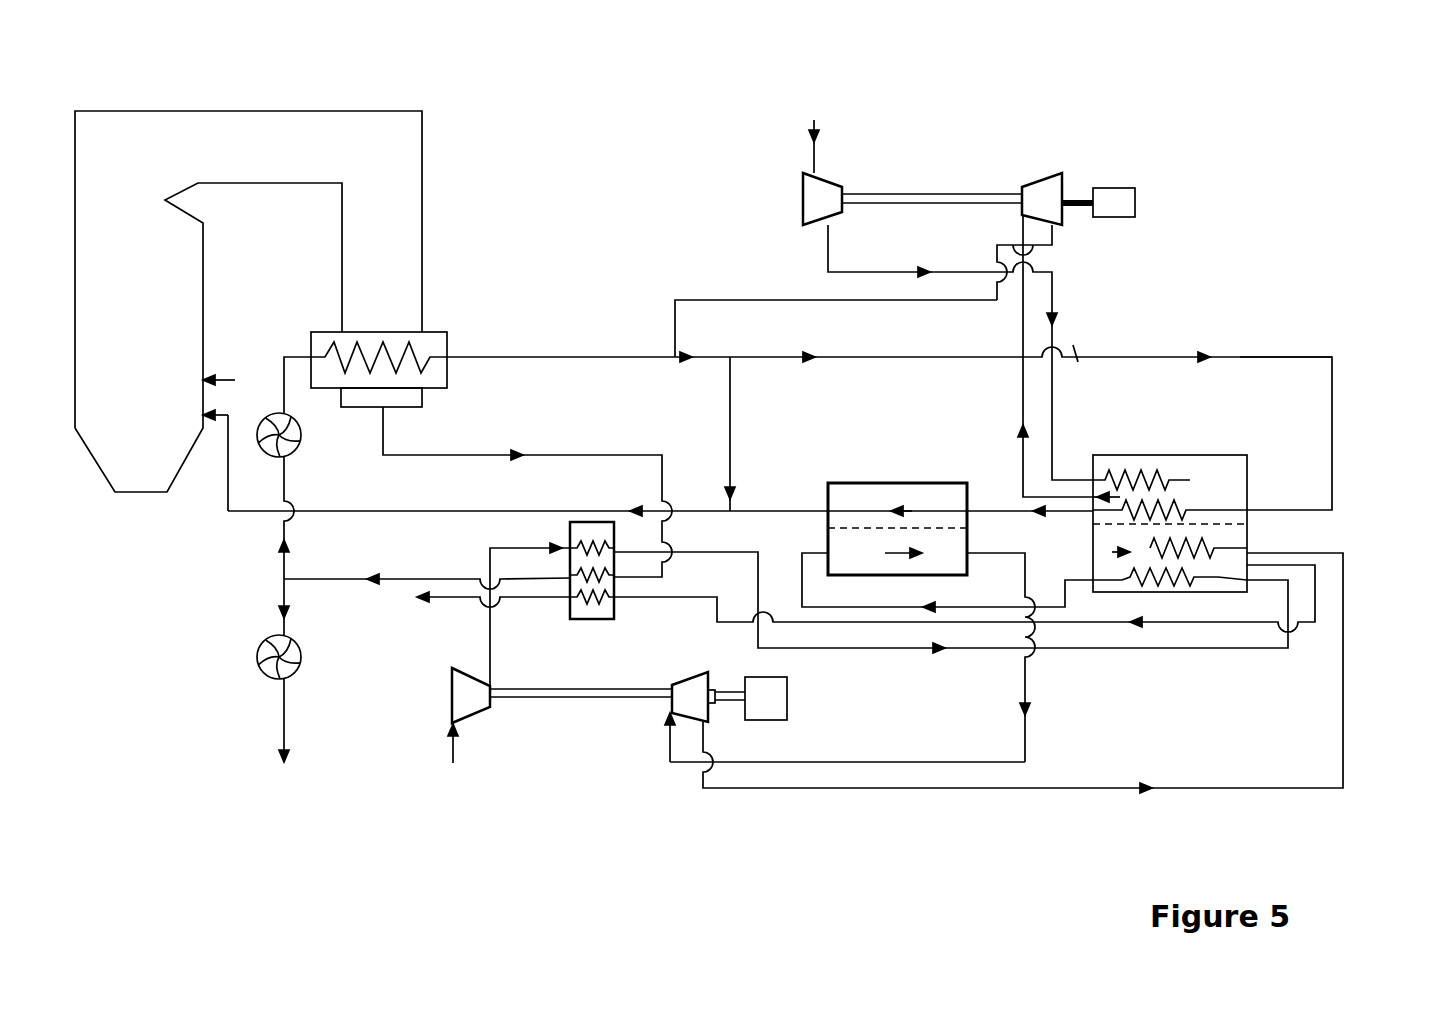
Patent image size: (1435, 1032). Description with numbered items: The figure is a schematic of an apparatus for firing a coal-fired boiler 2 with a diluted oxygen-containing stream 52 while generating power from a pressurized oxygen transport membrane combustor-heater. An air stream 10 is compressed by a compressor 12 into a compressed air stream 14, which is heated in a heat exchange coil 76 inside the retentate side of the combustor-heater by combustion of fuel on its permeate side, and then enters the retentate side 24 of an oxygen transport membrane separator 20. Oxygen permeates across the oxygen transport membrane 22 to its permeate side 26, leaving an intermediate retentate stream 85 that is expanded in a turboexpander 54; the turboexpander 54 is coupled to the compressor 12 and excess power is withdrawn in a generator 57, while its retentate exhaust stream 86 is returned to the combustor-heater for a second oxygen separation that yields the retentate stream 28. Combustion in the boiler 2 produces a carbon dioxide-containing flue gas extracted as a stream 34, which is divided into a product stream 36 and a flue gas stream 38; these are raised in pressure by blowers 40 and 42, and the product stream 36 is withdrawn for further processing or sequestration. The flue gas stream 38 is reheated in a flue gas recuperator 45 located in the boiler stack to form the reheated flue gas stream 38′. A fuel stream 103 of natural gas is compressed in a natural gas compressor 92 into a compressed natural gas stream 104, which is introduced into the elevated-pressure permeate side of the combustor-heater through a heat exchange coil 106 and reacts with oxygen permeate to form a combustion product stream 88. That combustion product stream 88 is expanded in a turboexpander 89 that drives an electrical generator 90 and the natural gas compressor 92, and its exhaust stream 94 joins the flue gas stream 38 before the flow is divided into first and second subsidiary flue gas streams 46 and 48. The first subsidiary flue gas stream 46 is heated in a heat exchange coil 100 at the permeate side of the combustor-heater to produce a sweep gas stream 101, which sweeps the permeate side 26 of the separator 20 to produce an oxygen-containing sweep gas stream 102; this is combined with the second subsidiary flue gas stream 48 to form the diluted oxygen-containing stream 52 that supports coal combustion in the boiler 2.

The boiler 2 is at (200, 150).
The flue gas recuperator 45 is at (437, 330).
The flue gas stream 38 is at (300, 357).
The heated flue gas line 38′ is at (545, 356).
The flue gas stream 34 is at (577, 454).
The blower 42 is at (300, 441).
The blower 40 is at (257, 667).
The product stream 36 is at (287, 723).
The diluted oxygen-containing stream 52 is at (420, 510).
The first subsidiary flue gas stream 46 is at (1160, 356).
The second subsidiary flue gas stream 48 is at (728, 455).
The exhaust stream 94 is at (863, 291).
The compressed natural gas stream 104 is at (910, 272).
The natural gas compressor 92 is at (813, 203).
The fuel stream 103 is at (812, 160).
The turboexpander 89 is at (1052, 202).
The electrical generator 90 is at (1107, 203).
The compressed air stream 14 is at (593, 622).
The compressor 12 is at (480, 692).
The air stream 10 is at (453, 748).
The turboexpander 54 is at (688, 703).
The generator 57 is at (772, 707).
The oxygen transport membrane separator 20 is at (918, 473).
The permeate side 26 is at (857, 497).
The retentate side 24 is at (870, 553).
The oxygen transport membrane 22 is at (928, 523).
The sweep gas stream 101 is at (995, 510).
The oxygen-containing sweep gas stream 102 is at (772, 510).
The intermediate retentate stream 85 is at (1022, 733).
The retentate exhaust stream 86 is at (967, 790).
The retentate stream 28 is at (1163, 622).
The heat exchange coil 76 is at (1180, 580).
The heat exchange coil 106 is at (1175, 470).
The heat exchange coil 100 is at (1192, 495).
The combustion product stream 88 is at (1020, 427).